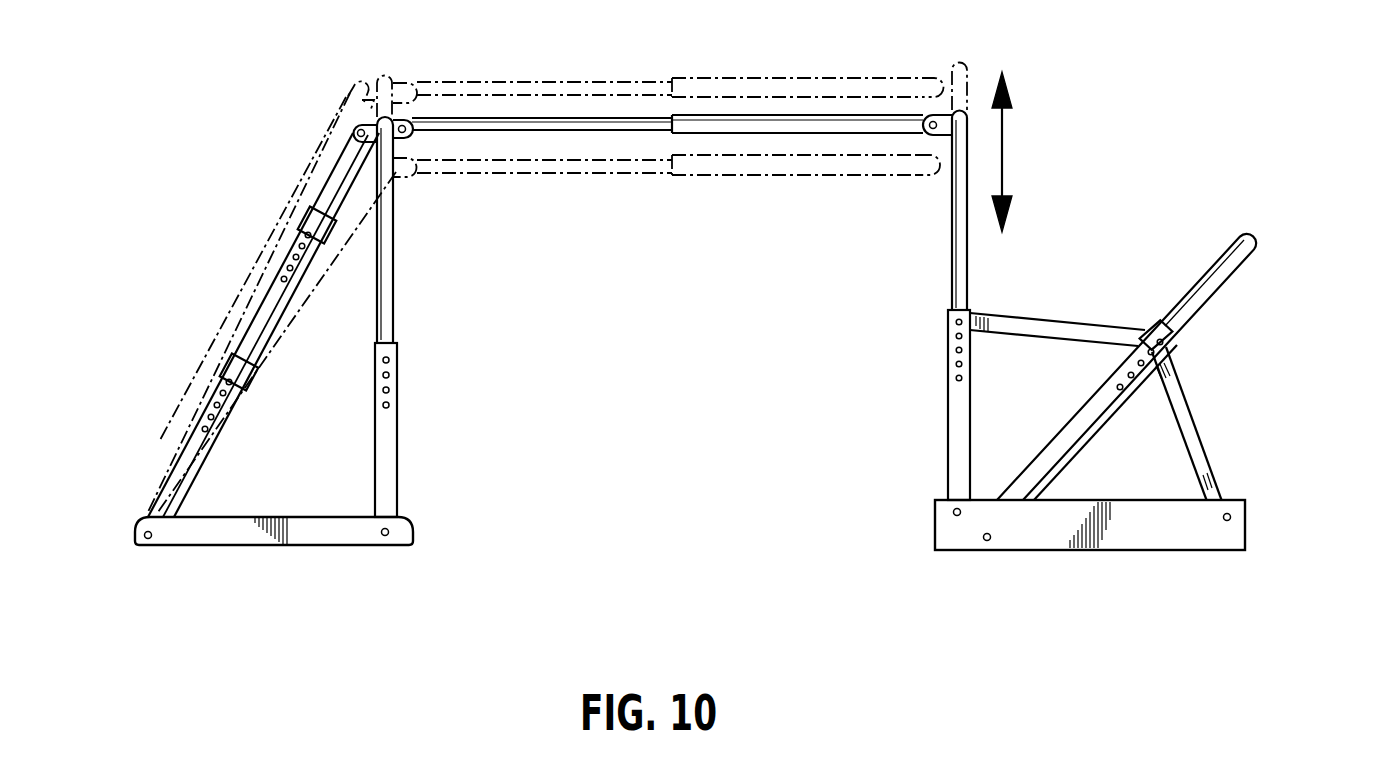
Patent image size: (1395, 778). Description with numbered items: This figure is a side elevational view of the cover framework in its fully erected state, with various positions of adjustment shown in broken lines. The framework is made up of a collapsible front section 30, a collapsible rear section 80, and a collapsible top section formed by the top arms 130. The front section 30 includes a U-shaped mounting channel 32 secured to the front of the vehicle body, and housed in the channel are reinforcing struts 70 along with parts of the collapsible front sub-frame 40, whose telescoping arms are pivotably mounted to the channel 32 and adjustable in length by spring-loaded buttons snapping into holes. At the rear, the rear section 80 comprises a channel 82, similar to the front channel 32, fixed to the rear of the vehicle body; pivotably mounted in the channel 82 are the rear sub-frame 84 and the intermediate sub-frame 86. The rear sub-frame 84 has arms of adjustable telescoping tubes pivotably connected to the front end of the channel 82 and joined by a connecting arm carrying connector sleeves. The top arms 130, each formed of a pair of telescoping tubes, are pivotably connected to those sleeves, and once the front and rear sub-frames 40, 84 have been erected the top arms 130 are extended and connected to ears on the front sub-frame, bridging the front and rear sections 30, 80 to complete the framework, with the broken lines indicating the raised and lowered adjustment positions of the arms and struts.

The top arms 130 is at (774, 96).
The collapsible front sub-frame 40 is at (420, 478).
The collapsible front section 30 is at (256, 262).
The reinforcing struts 70 is at (187, 376).
The mounting channels 32 is at (345, 547).
The rear sub-frame 84 is at (994, 290).
The collapsible rear section 80 is at (1213, 194).
The intermediate sub-frame 86 is at (1248, 291).
The channels 82 is at (1025, 552).